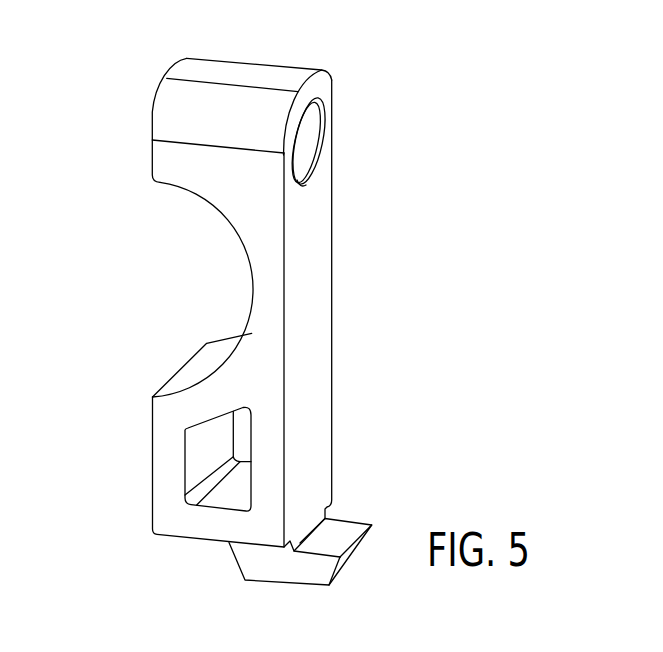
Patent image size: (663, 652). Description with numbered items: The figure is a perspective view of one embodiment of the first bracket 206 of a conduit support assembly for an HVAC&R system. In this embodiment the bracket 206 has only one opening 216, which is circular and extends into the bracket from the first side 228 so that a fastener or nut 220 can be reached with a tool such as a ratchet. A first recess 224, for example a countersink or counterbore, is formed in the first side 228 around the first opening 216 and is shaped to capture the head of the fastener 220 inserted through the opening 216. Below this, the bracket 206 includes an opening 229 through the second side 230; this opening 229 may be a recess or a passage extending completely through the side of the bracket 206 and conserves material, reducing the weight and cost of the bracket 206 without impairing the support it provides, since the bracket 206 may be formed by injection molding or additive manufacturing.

The first bracket 206 is at (248, 72).
The first opening 216 is at (313, 183).
The fastener 220 is at (307, 140).
The first recess 224 is at (320, 128).
The first side 228 is at (317, 428).
The opening 229 is at (208, 514).
The second side 230 is at (168, 525).